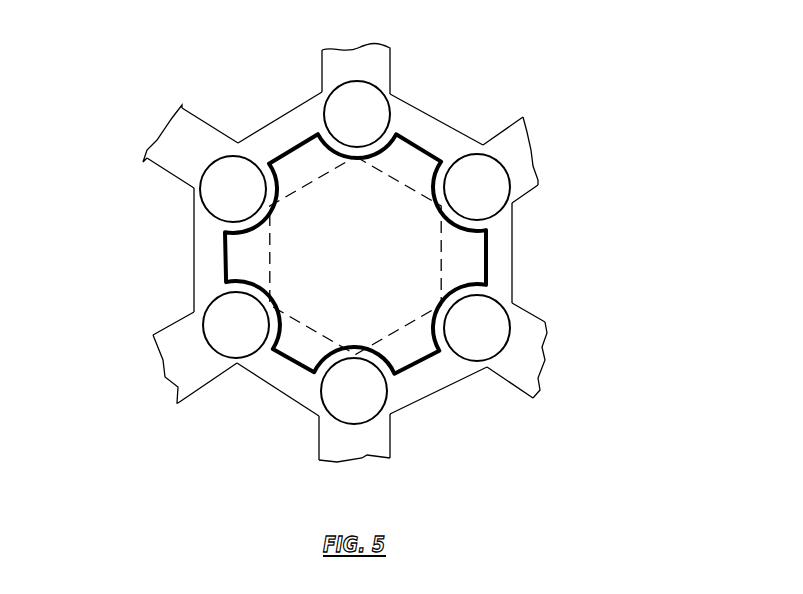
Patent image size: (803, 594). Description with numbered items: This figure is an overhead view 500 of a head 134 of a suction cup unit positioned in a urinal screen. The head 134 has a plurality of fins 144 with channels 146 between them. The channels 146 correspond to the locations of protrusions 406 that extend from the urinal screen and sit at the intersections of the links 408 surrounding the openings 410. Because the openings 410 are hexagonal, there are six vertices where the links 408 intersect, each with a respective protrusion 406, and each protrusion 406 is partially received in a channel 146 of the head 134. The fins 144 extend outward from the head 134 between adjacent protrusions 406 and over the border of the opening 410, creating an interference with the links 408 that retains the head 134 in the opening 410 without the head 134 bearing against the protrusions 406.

The cable termination assembly 500 is at (108, 31).
The head 134 is at (483, 145).
The fins 144 is at (293, 146).
The channels 146 is at (397, 133).
The protrusions 406 is at (317, 93).
The links 408 is at (253, 130).
The openings 410 is at (448, 270).